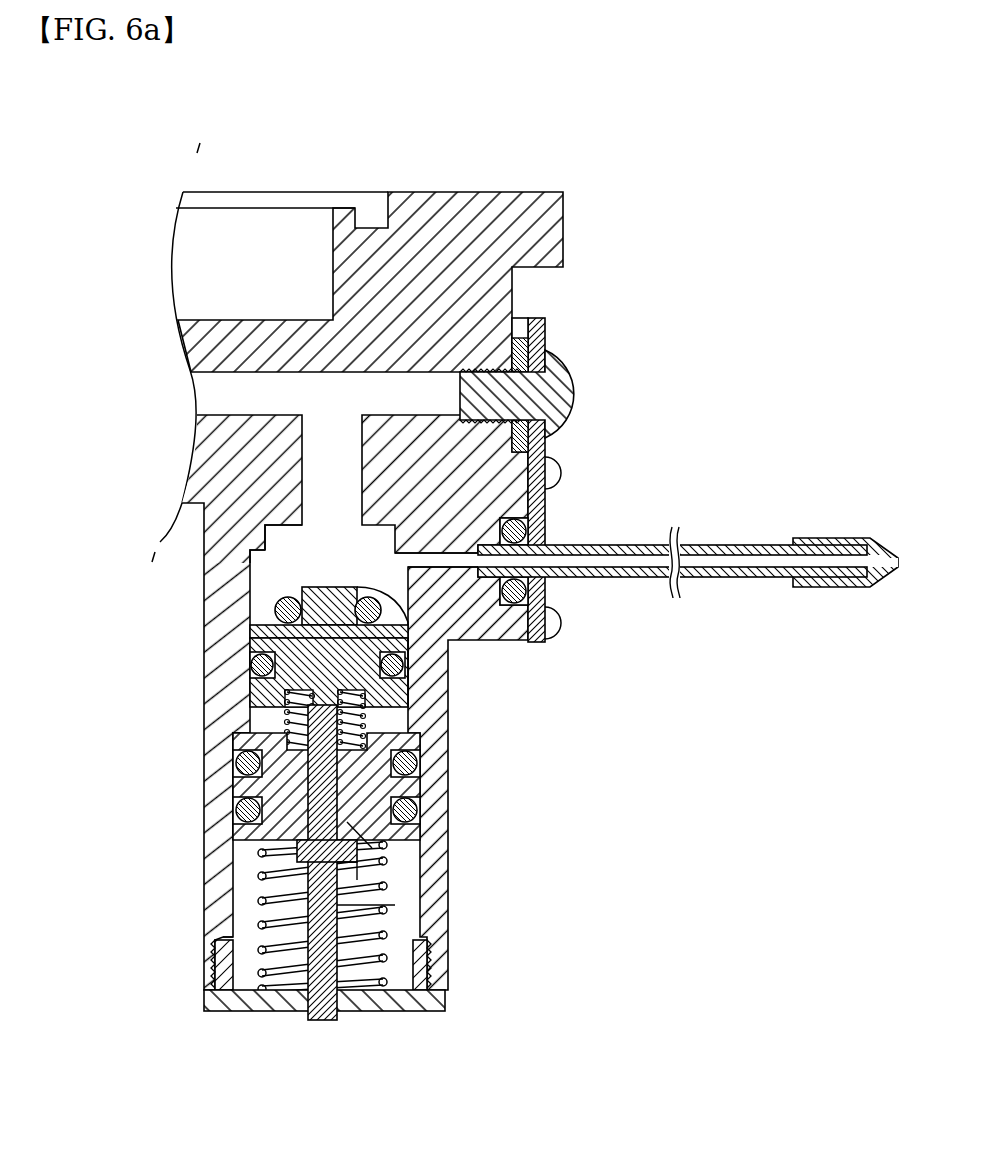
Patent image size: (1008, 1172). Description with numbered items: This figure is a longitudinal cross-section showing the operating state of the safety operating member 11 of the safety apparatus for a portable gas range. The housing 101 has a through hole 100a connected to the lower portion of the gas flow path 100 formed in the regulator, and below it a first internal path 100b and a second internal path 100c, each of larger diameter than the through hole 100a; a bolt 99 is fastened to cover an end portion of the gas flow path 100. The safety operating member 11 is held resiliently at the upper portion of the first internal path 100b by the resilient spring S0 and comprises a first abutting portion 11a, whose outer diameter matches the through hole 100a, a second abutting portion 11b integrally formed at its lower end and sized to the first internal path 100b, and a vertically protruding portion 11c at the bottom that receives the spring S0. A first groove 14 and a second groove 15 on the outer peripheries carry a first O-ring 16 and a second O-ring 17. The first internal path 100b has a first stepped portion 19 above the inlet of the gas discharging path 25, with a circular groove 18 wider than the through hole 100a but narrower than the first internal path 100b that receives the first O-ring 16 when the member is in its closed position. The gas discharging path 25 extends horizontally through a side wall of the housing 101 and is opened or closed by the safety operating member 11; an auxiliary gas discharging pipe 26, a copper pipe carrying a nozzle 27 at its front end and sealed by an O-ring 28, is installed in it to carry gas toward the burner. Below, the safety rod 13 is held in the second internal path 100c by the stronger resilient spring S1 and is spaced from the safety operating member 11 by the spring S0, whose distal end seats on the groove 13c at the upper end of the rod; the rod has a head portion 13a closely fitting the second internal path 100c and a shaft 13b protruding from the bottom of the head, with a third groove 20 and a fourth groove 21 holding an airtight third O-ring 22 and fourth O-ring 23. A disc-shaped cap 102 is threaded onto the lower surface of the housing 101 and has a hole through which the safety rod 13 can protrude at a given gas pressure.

The gas flow path 100 is at (222, 388).
The through hole 100a is at (322, 460).
The first internal path 100b is at (252, 593).
The second internal path 100c is at (245, 865).
The groove 18 is at (270, 540).
The first stepped portion 19 is at (255, 568).
The bolt 99 is at (556, 390).
The gas discharging path 25 is at (463, 563).
The O-ring 28 is at (543, 533).
The auxiliary gas discharging pipe 26 is at (737, 545).
The nozzle 27 is at (850, 538).
The safety operating member 11 is at (355, 668).
The first abutting portion 11a is at (412, 618).
The second abutting portion 11b is at (415, 640).
The vertically protruding portion 11c is at (418, 700).
The first groove 14 is at (302, 637).
The first O-ring 16 is at (275, 610).
The second O-ring 17 is at (250, 665).
The second groove 15 is at (290, 700).
The resilient spring S0 is at (290, 725).
The third groove 20 is at (425, 785).
The fourth groove 21 is at (395, 835).
The third O-ring 22 is at (236, 765).
The fourth O-ring 23 is at (236, 812).
The resilient spring S1 is at (250, 890).
The safety rod 13 is at (441, 895).
The head portion 13a is at (365, 855).
The shaft 13b is at (372, 883).
The groove 13c is at (398, 905).
The housing 101 is at (232, 940).
The disc-shaped cap 102 is at (410, 1000).